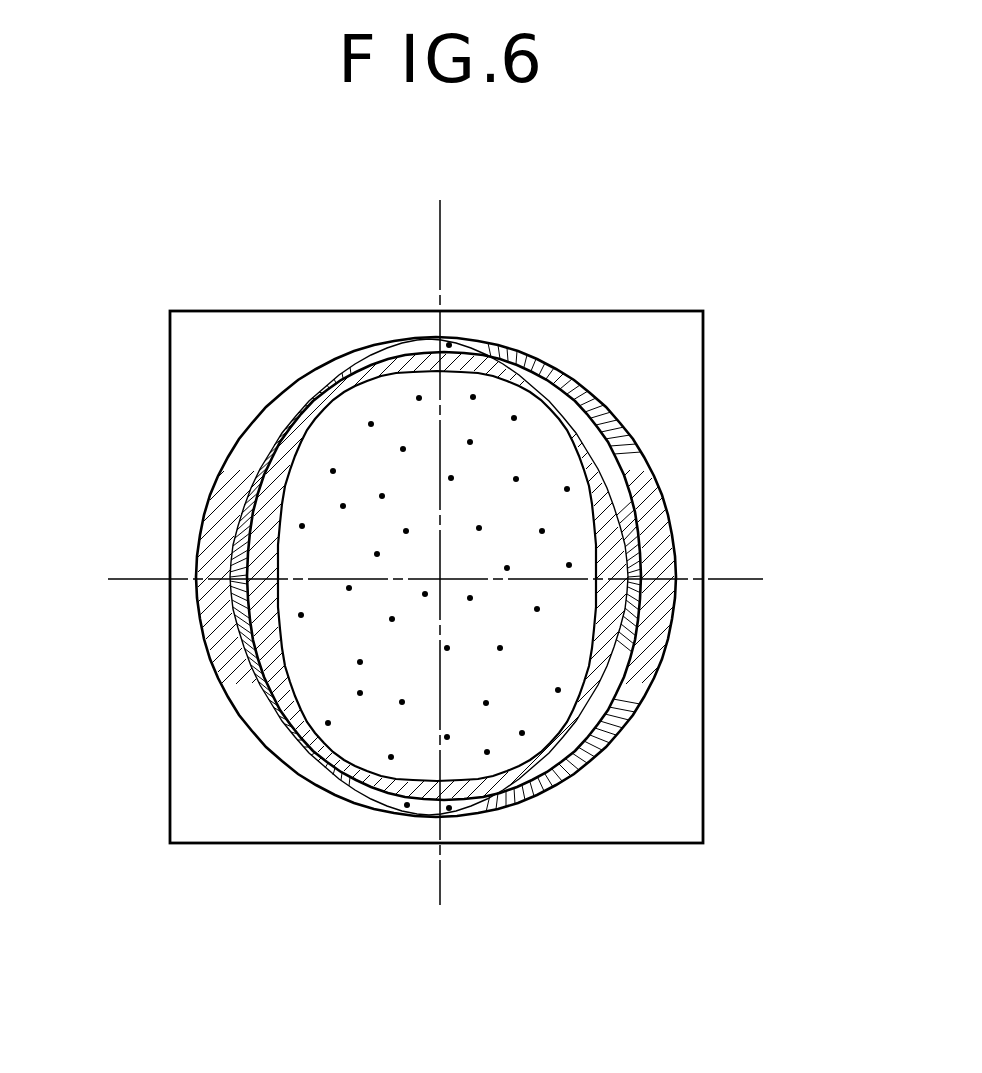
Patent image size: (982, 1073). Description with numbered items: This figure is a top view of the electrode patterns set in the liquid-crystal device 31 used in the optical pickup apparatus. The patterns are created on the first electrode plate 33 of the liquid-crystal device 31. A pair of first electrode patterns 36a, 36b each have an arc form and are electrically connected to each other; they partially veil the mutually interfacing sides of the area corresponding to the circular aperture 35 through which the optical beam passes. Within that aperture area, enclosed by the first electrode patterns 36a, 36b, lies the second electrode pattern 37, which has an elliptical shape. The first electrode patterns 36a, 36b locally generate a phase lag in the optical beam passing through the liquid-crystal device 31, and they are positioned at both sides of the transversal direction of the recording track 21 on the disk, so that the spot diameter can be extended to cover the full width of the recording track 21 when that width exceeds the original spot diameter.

The recording track 21 is at (448, 239).
The liquid-crystal device 31 is at (748, 338).
The first electrode plate 33 is at (650, 843).
The circular aperture 35 is at (362, 748).
The first electrode pattern 36a is at (207, 517).
The first electrode pattern 36b is at (665, 521).
The second electrode pattern 37 is at (498, 742).